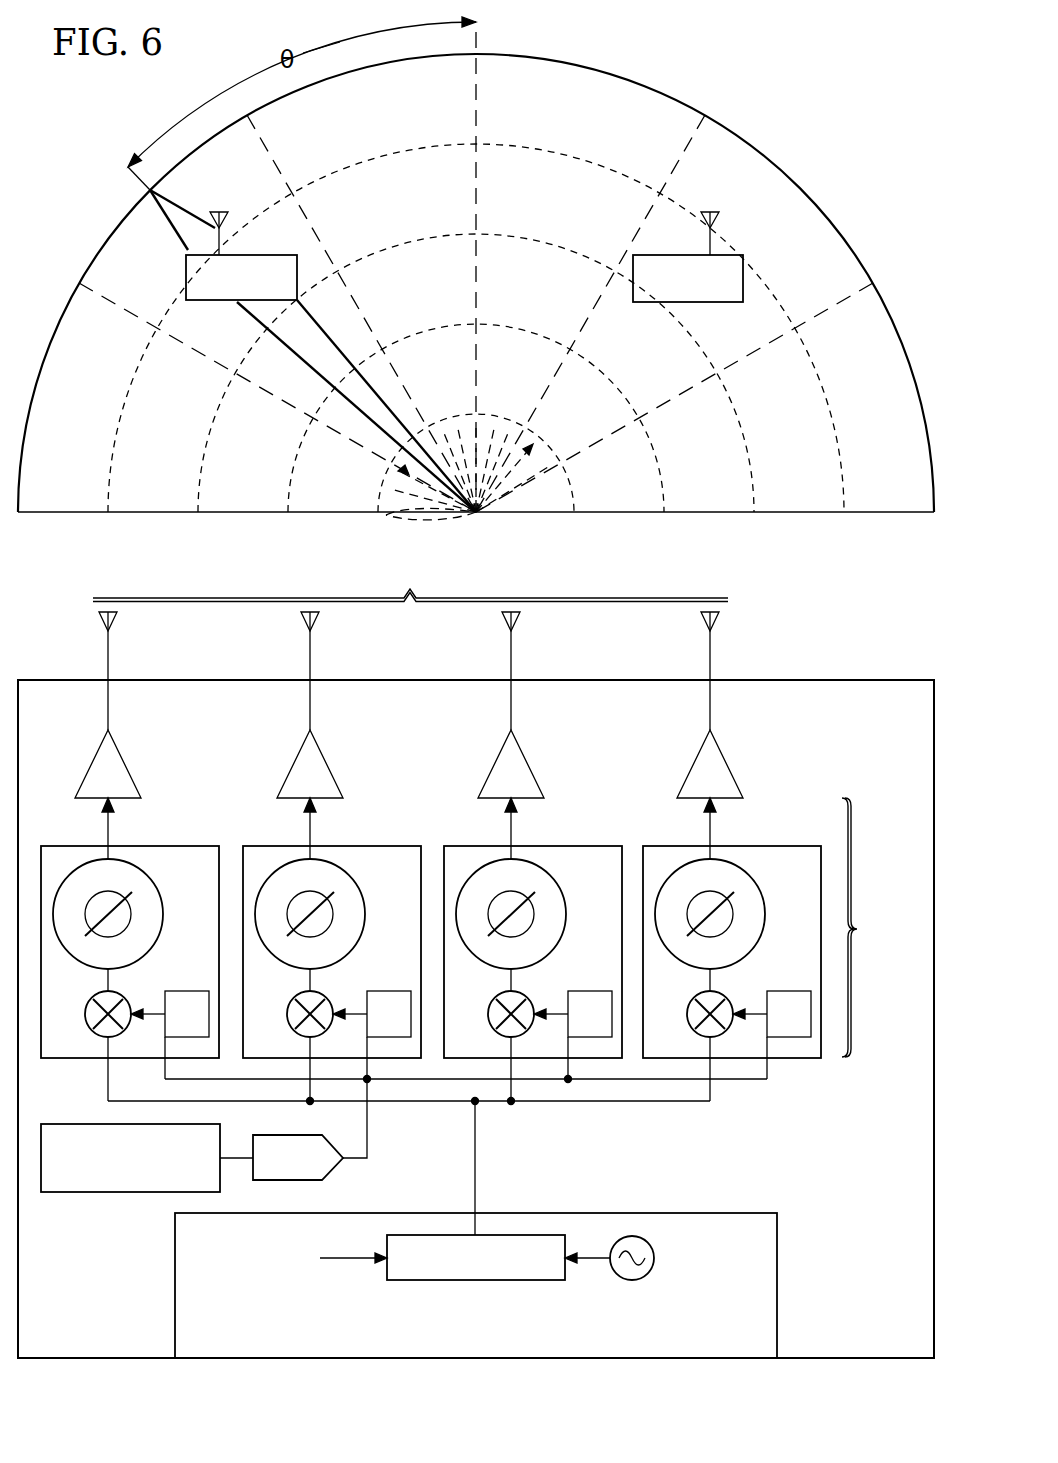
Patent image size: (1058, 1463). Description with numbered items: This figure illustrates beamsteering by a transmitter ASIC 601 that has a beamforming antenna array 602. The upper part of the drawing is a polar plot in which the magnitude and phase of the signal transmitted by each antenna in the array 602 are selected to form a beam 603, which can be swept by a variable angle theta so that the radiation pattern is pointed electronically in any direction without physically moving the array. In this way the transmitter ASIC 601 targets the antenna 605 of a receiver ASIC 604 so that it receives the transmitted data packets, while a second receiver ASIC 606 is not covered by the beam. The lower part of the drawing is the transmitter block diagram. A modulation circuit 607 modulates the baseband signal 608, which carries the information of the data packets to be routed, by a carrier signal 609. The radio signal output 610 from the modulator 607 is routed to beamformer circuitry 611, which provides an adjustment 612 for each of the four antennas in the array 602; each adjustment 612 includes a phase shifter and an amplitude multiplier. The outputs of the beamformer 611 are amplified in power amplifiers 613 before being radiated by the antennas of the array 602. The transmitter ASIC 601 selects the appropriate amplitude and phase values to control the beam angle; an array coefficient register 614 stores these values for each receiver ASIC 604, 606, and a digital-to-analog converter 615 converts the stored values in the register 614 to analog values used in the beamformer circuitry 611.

The transmitter ASIC 601 is at (70, 674).
The beamforming antenna array 602 is at (412, 644).
The beam 603 is at (366, 414).
The receiver ASIC 604 is at (186, 277).
The antenna 605 is at (219, 212).
The receiver ASIC 606 is at (743, 278).
The modulation circuit 607 is at (487, 1280).
The baseband signal 608 is at (265, 1288).
The carrier signal 609 is at (654, 1267).
The radio signal output 610 is at (475, 1168).
The beamformer circuitry 611 is at (875, 927).
The adjustment 612 is at (55, 846).
The power amplifiers 613 is at (94, 761).
The array coefficient register 614 is at (128, 1192).
The digital-to-analog converter 615 is at (330, 1173).